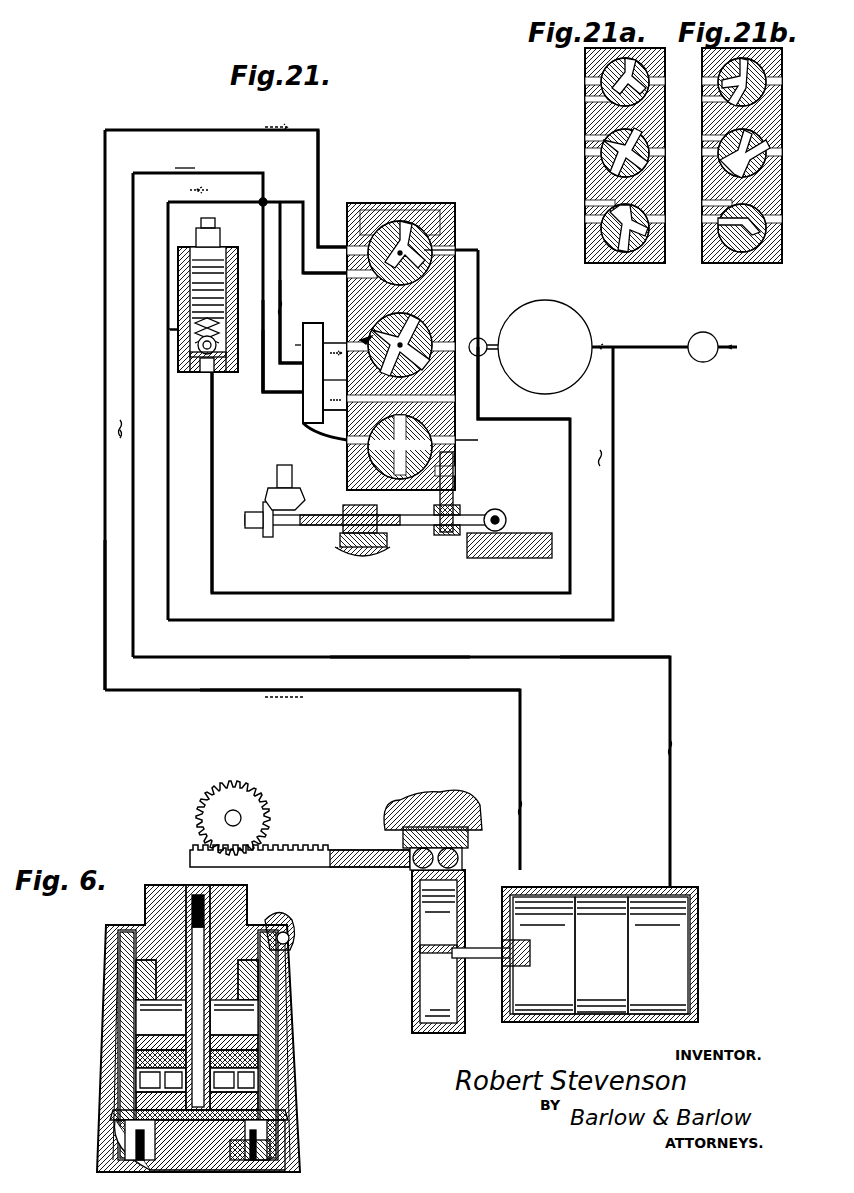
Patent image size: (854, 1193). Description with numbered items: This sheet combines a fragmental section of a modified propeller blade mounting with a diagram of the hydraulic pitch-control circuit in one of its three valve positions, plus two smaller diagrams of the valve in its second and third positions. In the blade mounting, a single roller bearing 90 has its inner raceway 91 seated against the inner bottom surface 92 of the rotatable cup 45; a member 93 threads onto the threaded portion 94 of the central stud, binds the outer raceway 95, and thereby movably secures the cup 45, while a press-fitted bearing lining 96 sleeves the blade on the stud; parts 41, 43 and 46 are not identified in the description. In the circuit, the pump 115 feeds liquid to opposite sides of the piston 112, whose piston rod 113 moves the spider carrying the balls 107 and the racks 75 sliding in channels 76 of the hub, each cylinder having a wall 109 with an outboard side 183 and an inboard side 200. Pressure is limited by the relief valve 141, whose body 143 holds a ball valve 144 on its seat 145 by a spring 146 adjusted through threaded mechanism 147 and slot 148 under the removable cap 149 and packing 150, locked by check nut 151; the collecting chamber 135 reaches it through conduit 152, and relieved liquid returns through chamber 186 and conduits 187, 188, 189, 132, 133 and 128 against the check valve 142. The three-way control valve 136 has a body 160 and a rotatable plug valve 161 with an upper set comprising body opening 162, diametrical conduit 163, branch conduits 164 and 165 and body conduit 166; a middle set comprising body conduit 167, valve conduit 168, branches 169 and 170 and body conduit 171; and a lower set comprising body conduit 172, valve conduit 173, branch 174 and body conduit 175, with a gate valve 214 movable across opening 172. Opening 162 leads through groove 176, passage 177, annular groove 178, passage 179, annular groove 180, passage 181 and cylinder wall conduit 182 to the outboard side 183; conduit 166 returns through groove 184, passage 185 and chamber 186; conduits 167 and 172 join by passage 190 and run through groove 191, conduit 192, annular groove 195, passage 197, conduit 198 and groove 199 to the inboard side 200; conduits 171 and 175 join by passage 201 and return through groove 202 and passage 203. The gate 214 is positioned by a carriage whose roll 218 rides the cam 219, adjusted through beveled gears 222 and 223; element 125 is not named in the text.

In FIG. 6, the bracket ear 41 is at (288, 975).
In FIG. 6, the spring pin 43 is at (270, 1130).
In FIG. 6, the rotatable cup 45 is at (285, 1005).
In FIG. 21, the gear 46 is at (250, 822).
In FIG. 6, the gear 46 is at (270, 1150).
In FIG. 21, the racks 75 is at (318, 868).
In FIG. 6, the racks 75 is at (118, 1130).
In FIG. 6, the channels 76 is at (120, 1140).
In FIG. 6, the roller bearing 90 is at (258, 1085).
In FIG. 6, the inner raceway 91 is at (258, 1104).
In FIG. 6, the inner bottom surface 92 is at (130, 1115).
In FIG. 6, the member 93 is at (258, 1045).
In FIG. 6, the threaded portion 94 is at (108, 1060).
In FIG. 6, the outer raceway 95 is at (258, 1065).
In FIG. 6, the bearing lining 96 is at (118, 1003).
In FIG. 21, the balls 107 is at (465, 860).
In FIG. 21, the cylinder wall 109 is at (620, 887).
In FIG. 21, the piston 112 is at (600, 1022).
In FIG. 21, the piston rod 113 is at (485, 960).
In FIG. 21, the pump 115 is at (580, 308).
In FIG. 21, the port 125 is at (312, 433).
In FIG. 21A, the port 125 is at (585, 200).
In FIG. 21B, the port 125 is at (702, 200).
In FIG. 21, the conduit 128 is at (612, 347).
In FIG. 21, the conduit 132 is at (168, 608).
In FIG. 21, the conduit 133 is at (167, 416).
In FIG. 21, the collecting chamber 135 is at (505, 347).
In FIG. 21, the three-way control valve 136 is at (455, 210).
In FIG. 21, the relief valve 141 is at (175, 310).
In FIG. 21, the check valve 142 is at (715, 355).
In FIG. 21, the body 143 is at (190, 320).
In FIG. 21, the ball valve 144 is at (190, 352).
In FIG. 21, the seat 145 is at (200, 375).
In FIG. 21, the spring 146 is at (230, 375).
In FIG. 21, the threaded mechanism 147 is at (180, 297).
In FIG. 21, the slot 148 is at (220, 222).
In FIG. 21, the removable cap 149 is at (200, 268).
In FIG. 21, the packing 150 is at (190, 285).
In FIG. 21, the check nut 151 is at (200, 258).
In FIG. 21, the conduit 152 is at (500, 625).
In FIG. 21, the body 160 is at (455, 203).
In FIG. 21, the tapered plug type valve 161 is at (430, 210).
In FIG. 21, the main conduit opening 162 is at (445, 252).
In FIG. 21A, the main conduit opening 162 is at (585, 80).
In FIG. 21B, the main conduit opening 162 is at (702, 80).
In FIG. 21, the main diametrical conduit 163 is at (425, 334).
In FIG. 21A, the main diametrical conduit 163 is at (620, 90).
In FIG. 21B, the main diametrical conduit 163 is at (730, 64).
In FIG. 21, the branch conduit 164 is at (376, 228).
In FIG. 21, the branch conduit 165 is at (402, 224).
In FIG. 21A, the conduit 166 is at (585, 99).
In FIG. 21B, the conduit 166 is at (702, 99).
In FIG. 21, the main conduit 167 is at (412, 320).
In FIG. 21A, the main conduit 167 is at (605, 160).
In FIG. 21B, the main conduit 167 is at (722, 158).
In FIG. 21, the main conduit 168 is at (483, 285).
In FIG. 21A, the main conduit 168 is at (610, 168).
In FIG. 21B, the main conduit 168 is at (730, 170).
In FIG. 21, the branch conduit 169 is at (330, 345).
In FIG. 21, the branch conduit 170 is at (339, 376).
In FIG. 21, the conduit 171 is at (322, 320).
In FIG. 21A, the conduit 171 is at (585, 137).
In FIG. 21B, the conduit 171 is at (702, 137).
In FIG. 21, the main conduit 172 is at (480, 440).
In FIG. 21A, the main conduit 172 is at (585, 220).
In FIG. 21B, the main conduit 172 is at (705, 218).
In FIG. 21, the main conduit 173 is at (392, 530).
In FIG. 21A, the main conduit 173 is at (605, 247).
In FIG. 21, the branch conduit 174 is at (455, 415).
In FIG. 21A, the branch conduit 174 is at (590, 238).
In FIG. 21B, the branch conduit 174 is at (735, 240).
In FIG. 21B, the conduit 175 is at (748, 240).
In FIG. 21, the groove 176 is at (321, 160).
In FIG. 21, the passage 177 is at (226, 179).
In FIG. 21, the annular groove 178 is at (105, 420).
In FIG. 21, the passage 179 is at (105, 540).
In FIG. 21, the annular groove 180 is at (150, 695).
In FIG. 21, the passage 181 is at (243, 692).
In FIG. 21, the cylinder wall conduit 182 is at (385, 692).
In FIG. 21, the outboard side 183 is at (575, 872).
In FIG. 21, the groove 184 is at (285, 200).
In FIG. 21, the passage 185 is at (185, 202).
In FIG. 21, the annular chamber 186 is at (347, 270).
In FIG. 21, the passage 187 is at (205, 415).
In FIG. 21, the passage 188 is at (205, 440).
In FIG. 21, the passageway 189 is at (133, 560).
In FIG. 21, the passage 190 is at (339, 395).
In FIG. 21, the groove 191 is at (258, 395).
In FIG. 21, the conduit 192 is at (245, 165).
In FIG. 21, the annular groove 195 is at (300, 657).
In FIG. 21, the passage 197 is at (347, 657).
In FIG. 21, the communicating conduit 198 is at (410, 657).
In FIG. 21, the groove 199 is at (530, 657).
In FIG. 21, the inboard side 200 is at (680, 945).
In FIG. 21, the passage 201 is at (299, 345).
In FIG. 21, the groove 202 is at (283, 346).
In FIG. 21, the passage 203 is at (193, 193).
In FIG. 21, the gate valve 214 is at (455, 497).
In FIG. 21, the roll 218 is at (505, 512).
In FIG. 21, the cam 219 is at (535, 522).
In FIG. 21, the beveled gear 222 is at (263, 537).
In FIG. 21, the beveled gear 223 is at (268, 490).